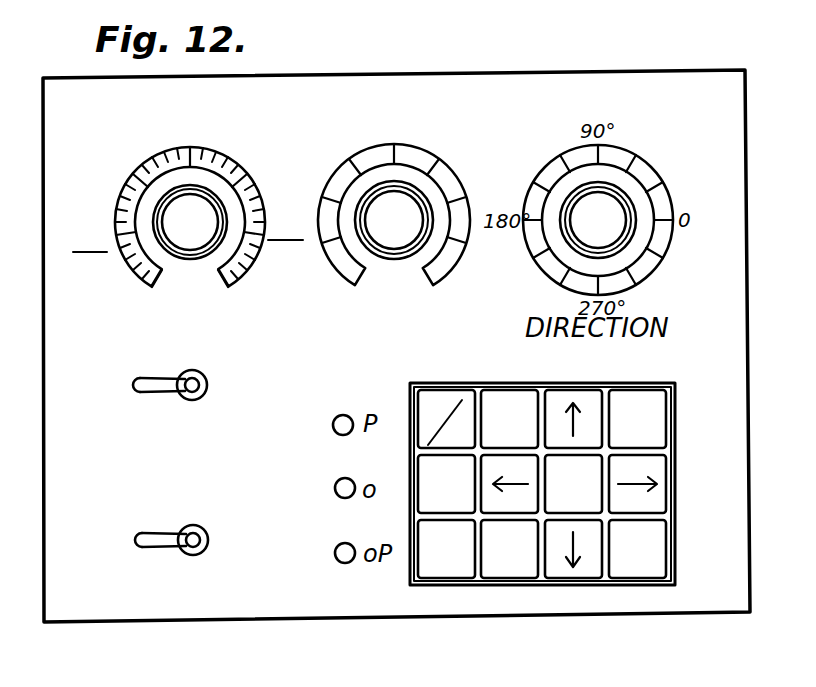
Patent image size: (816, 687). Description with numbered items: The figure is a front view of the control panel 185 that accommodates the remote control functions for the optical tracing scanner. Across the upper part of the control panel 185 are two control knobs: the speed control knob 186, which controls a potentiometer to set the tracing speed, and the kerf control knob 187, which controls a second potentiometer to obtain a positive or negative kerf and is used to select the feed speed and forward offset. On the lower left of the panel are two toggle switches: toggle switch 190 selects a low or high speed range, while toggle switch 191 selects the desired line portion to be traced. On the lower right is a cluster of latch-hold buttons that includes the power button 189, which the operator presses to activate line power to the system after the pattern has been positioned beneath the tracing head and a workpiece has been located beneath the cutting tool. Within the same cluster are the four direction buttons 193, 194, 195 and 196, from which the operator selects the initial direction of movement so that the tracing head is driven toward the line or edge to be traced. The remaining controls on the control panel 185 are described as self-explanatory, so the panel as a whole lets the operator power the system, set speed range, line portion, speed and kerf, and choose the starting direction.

The control panel 185 is at (320, 88).
The speed control knob 186 is at (147, 158).
The kerf control knob 187 is at (410, 153).
The power button 189 is at (543, 502).
The toggle switch 190 is at (165, 373).
The toggle switch 191 is at (148, 532).
The direction button 193 is at (500, 497).
The direction button 194 is at (590, 402).
The direction button 195 is at (652, 463).
The direction button 196 is at (593, 565).